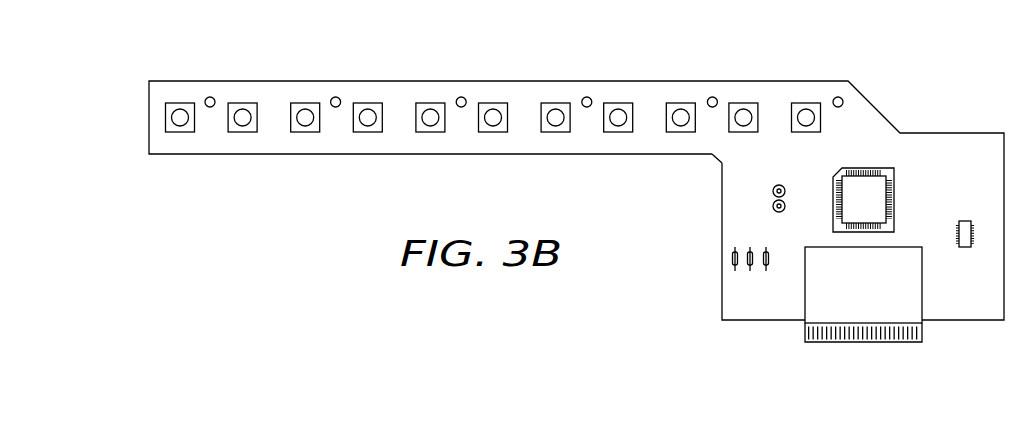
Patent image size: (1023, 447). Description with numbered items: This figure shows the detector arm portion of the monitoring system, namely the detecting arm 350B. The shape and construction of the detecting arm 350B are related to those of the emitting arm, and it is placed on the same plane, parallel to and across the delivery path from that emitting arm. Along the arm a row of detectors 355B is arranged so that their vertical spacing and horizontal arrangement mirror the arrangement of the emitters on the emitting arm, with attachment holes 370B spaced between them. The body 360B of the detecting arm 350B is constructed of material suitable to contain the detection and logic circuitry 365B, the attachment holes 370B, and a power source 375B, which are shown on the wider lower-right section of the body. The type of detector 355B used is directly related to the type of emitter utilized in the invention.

The detecting arm 350B is at (931, 88).
The detectors 355B is at (175, 102).
The body 360B is at (720, 220).
The detection and logic circuitry 365B is at (874, 201).
The attachment holes 370B is at (210, 96).
The power source 375B is at (847, 343).